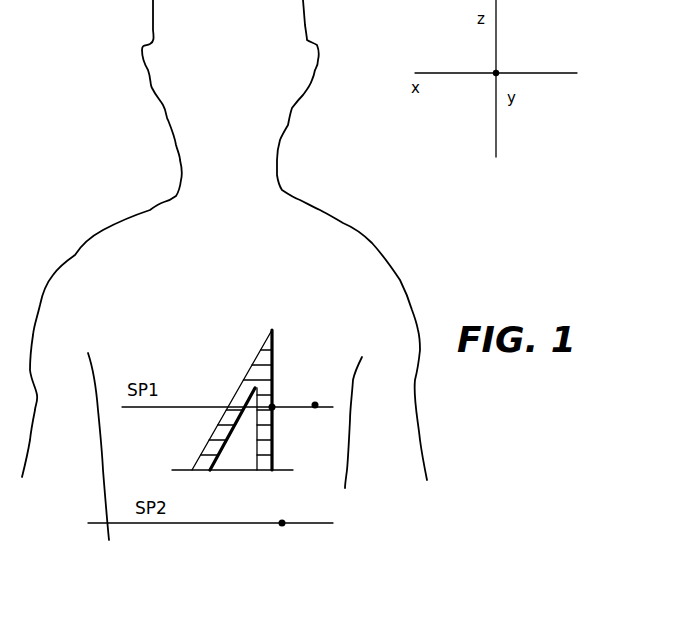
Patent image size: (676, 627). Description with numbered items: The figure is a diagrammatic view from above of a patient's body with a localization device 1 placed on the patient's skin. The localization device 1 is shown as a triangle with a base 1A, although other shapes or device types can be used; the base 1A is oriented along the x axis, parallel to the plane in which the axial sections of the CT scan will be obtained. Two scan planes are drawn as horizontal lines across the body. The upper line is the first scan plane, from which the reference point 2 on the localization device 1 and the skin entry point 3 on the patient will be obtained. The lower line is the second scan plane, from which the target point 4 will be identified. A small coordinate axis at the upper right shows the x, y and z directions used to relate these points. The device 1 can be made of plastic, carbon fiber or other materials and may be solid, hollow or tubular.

The localization device 1 is at (248, 378).
The base 1A is at (252, 471).
The reference point 2 is at (275, 405).
The skin entry point 3 is at (318, 408).
The target point 4 is at (283, 527).